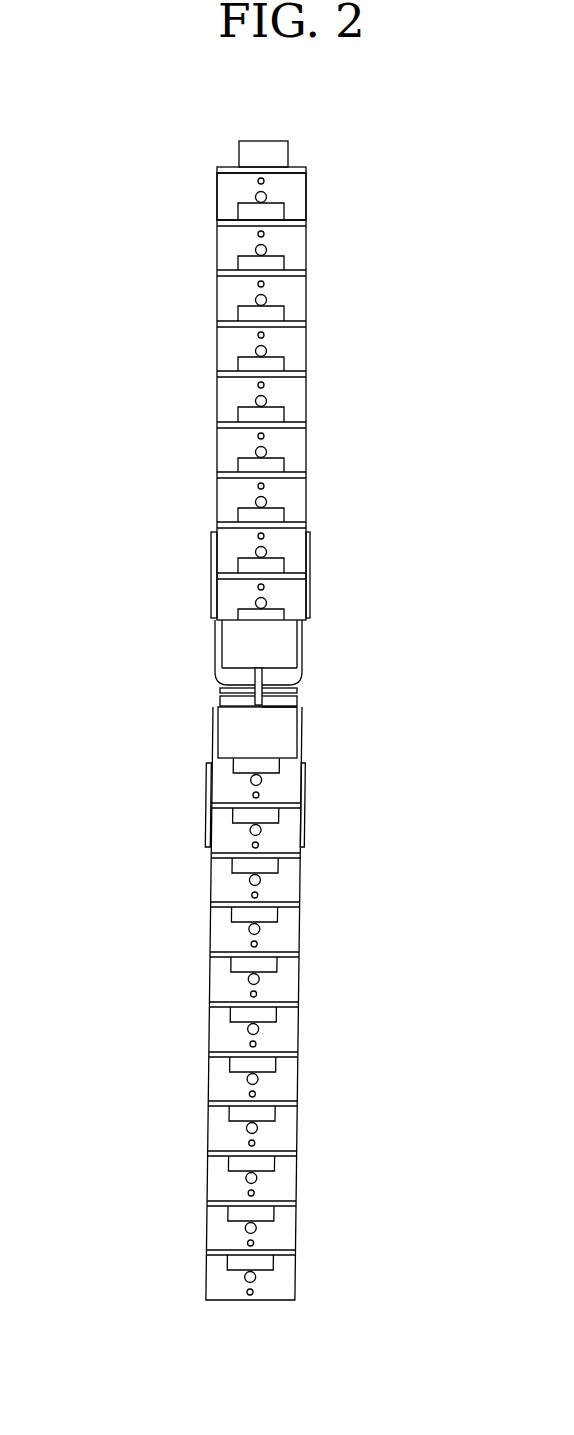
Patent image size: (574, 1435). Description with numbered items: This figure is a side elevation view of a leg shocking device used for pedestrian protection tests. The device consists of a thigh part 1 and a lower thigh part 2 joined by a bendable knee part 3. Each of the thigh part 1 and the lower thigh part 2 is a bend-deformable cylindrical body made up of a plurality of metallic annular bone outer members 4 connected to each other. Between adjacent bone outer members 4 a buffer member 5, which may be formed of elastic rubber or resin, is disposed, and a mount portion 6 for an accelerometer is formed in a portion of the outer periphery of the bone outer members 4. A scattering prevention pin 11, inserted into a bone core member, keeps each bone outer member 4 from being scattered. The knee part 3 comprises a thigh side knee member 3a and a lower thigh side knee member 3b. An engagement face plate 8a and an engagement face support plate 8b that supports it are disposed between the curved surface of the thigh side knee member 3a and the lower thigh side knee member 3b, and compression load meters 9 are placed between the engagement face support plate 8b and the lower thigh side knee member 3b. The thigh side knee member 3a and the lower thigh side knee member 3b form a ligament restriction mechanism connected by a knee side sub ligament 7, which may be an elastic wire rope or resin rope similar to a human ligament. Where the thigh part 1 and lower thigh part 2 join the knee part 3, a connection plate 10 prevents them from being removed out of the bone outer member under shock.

The thigh part 1 is at (303, 405).
The lower thigh part 2 is at (270, 999).
The knee part 3 is at (231, 667).
The thigh side knee member 3a is at (242, 638).
The lower thigh side knee member 3b is at (240, 737).
The bone outer member 4 is at (230, 188).
The buffer member 5 is at (231, 208).
The mount portion 6 is at (275, 210).
The knee side sub ligament 7 is at (252, 681).
The engagement face plate 8a is at (218, 690).
The engagement face support plate 8b is at (217, 700).
The compression load meter 9 is at (300, 753).
The connection plate 10 is at (203, 800).
The scattering prevention pin 11 is at (258, 845).